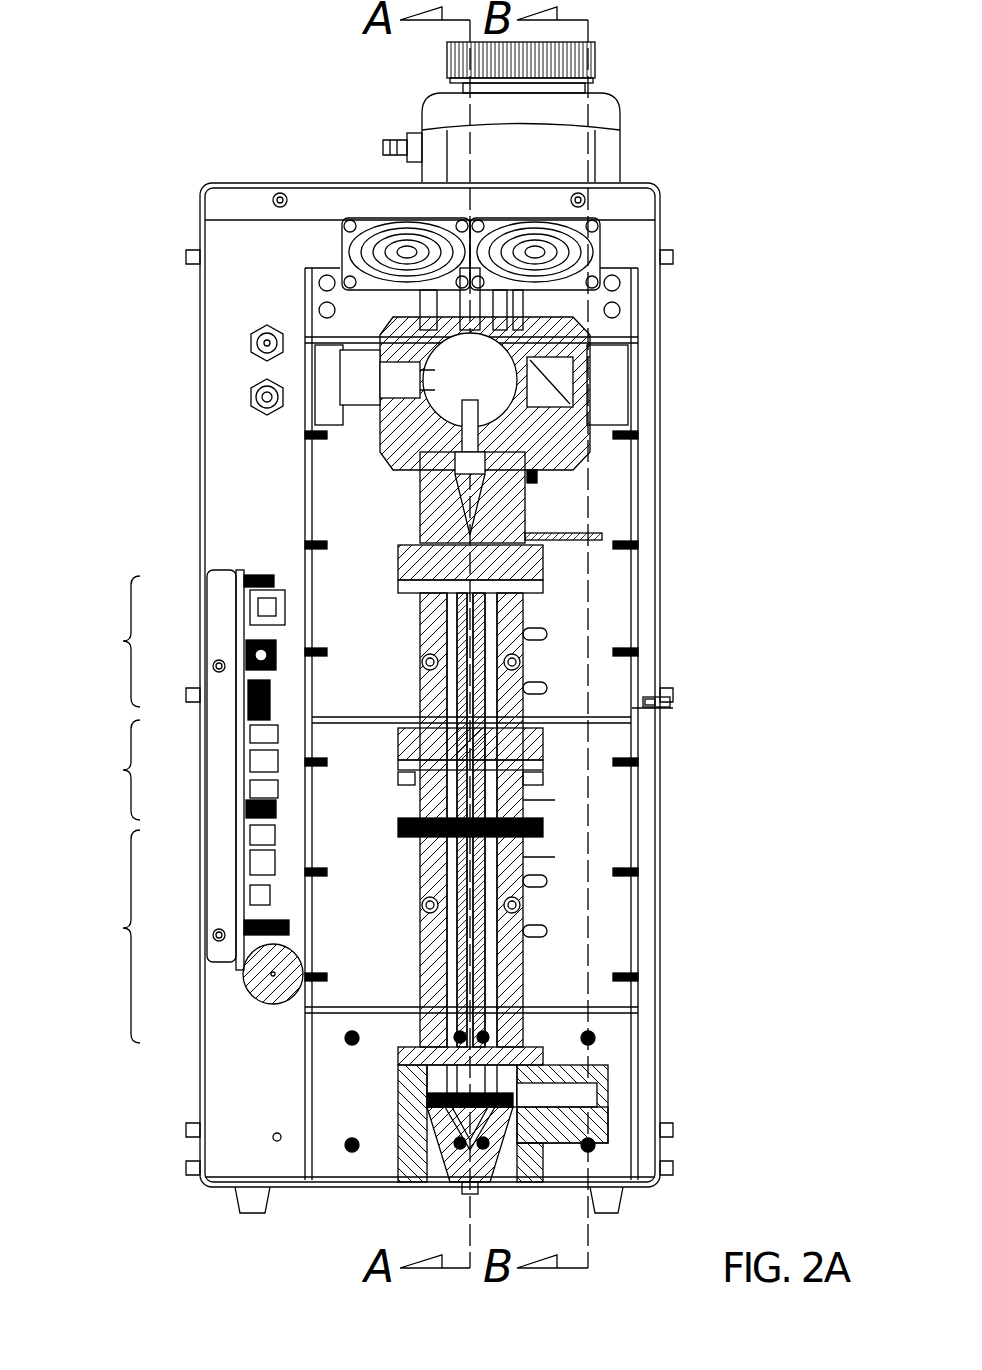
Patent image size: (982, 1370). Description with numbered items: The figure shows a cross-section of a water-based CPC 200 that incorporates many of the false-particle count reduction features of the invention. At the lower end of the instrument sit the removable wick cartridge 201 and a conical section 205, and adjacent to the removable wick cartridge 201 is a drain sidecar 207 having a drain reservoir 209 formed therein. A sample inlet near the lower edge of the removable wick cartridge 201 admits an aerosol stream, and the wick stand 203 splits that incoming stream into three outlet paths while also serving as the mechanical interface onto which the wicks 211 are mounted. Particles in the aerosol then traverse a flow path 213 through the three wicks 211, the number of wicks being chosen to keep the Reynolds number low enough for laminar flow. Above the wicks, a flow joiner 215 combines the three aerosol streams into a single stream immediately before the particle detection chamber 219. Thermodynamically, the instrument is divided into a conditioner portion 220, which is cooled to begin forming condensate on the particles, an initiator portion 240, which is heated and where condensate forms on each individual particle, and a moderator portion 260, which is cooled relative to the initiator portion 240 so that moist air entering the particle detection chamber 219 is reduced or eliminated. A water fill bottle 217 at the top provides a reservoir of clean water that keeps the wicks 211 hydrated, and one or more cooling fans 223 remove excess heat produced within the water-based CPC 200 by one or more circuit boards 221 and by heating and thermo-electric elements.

The water-based CPC 200 is at (133, 80).
The removable wick cartridge 201 is at (413, 1123).
The wick stand 203 is at (410, 1080).
The conical section 205 is at (497, 1140).
The drain sidecar 207 is at (600, 1130).
The drain reservoir 209 is at (567, 1098).
The wicks 211 is at (495, 705).
The flow path 213 is at (488, 632).
The flow joiner 215 is at (505, 427).
The water fill bottle 217 is at (621, 146).
The particle detection chamber 219 is at (500, 353).
The conditioner portion 220 is at (106, 936).
The circuit boards 221 is at (223, 568).
The cooling fans 223 is at (533, 222).
The initiator portion 240 is at (106, 770).
The moderator portion 260 is at (106, 641).